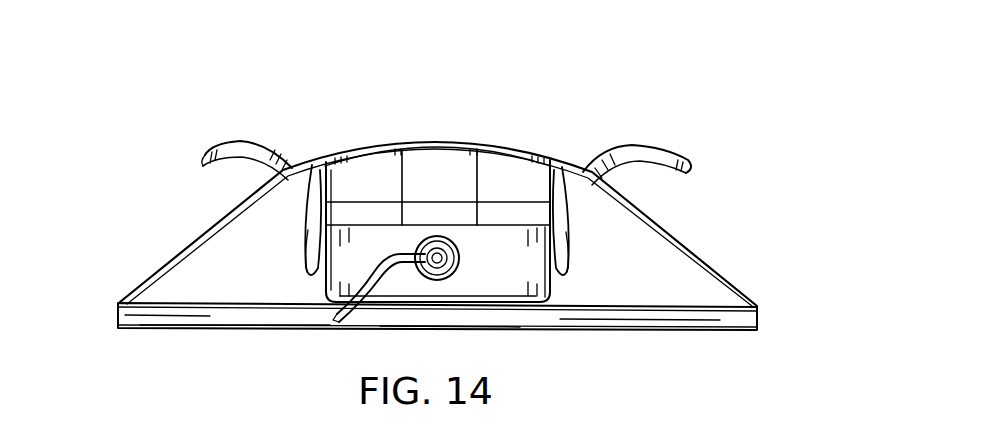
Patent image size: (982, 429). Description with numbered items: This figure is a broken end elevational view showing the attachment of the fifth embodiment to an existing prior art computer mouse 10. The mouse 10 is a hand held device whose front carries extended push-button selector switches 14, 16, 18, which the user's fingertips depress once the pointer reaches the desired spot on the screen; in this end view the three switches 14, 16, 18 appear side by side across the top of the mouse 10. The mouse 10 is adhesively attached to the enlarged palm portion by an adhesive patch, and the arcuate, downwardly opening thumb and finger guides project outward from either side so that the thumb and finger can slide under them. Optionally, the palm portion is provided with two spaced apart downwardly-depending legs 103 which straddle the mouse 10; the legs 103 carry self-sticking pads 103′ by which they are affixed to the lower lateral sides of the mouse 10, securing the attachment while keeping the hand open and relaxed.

The downwardly-depending legs 103 is at (307, 226).
The self-sticking pads 103′ is at (317, 274).
The computer mouse 10 is at (500, 283).
The push-button selector switch 14 is at (527, 199).
The push-button selector switch 16 is at (457, 199).
The push-button selector switch 18 is at (384, 199).